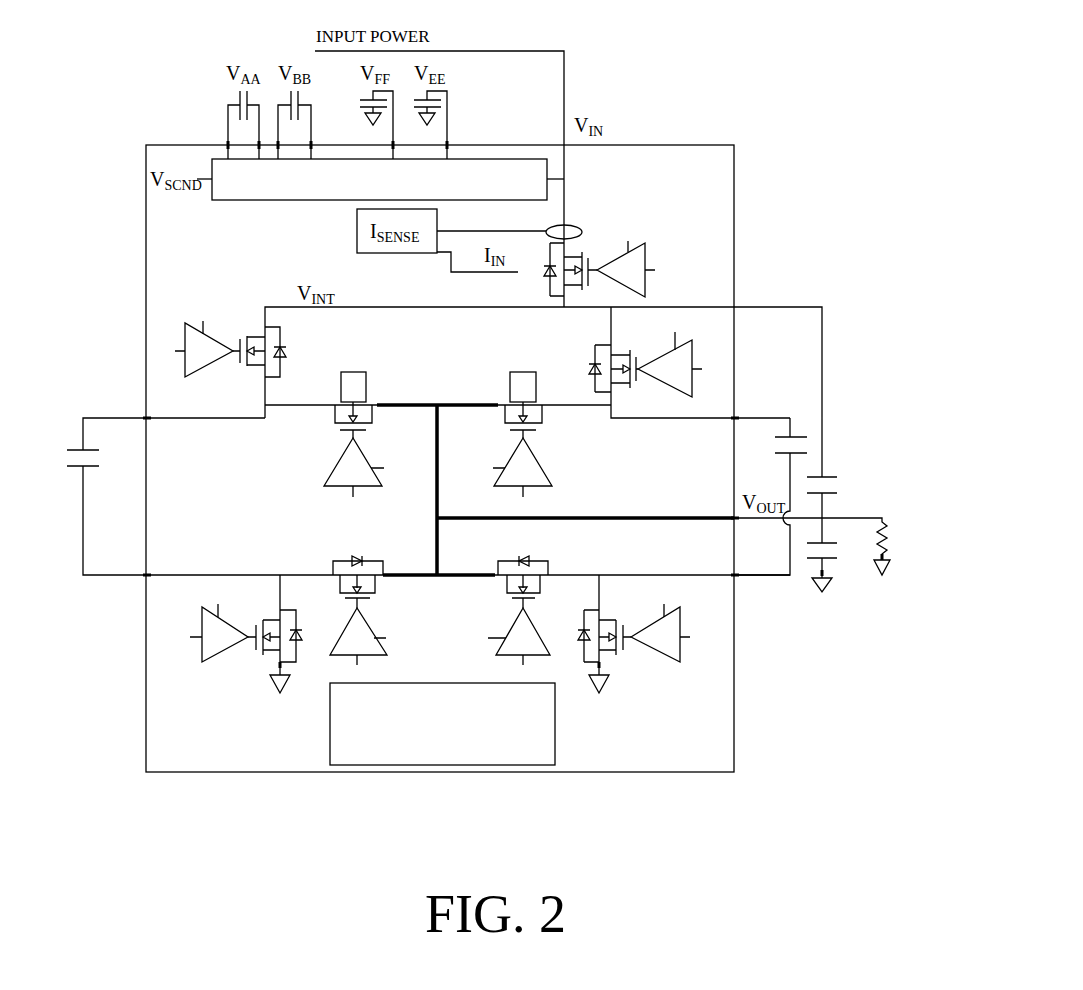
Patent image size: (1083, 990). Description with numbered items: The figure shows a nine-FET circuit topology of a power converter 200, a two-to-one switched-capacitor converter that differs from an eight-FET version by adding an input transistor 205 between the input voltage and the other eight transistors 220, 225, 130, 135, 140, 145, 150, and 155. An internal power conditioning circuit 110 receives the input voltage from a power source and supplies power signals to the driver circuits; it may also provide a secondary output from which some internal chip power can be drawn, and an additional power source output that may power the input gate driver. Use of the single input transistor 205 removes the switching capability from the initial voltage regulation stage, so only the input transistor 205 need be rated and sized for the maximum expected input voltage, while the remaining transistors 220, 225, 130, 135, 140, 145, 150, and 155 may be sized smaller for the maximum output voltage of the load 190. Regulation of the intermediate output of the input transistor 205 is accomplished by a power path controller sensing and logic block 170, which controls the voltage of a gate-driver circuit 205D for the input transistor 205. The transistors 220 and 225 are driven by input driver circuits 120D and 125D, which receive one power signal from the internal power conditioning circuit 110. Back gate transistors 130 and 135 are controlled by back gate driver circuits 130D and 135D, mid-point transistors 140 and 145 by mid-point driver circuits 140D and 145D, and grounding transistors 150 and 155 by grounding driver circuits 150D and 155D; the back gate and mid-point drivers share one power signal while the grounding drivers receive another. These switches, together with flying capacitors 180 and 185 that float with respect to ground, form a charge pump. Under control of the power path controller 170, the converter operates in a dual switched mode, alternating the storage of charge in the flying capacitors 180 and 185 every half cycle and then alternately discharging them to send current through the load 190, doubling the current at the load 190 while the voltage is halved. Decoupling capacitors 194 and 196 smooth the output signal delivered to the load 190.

The power converter 200 is at (765, 86).
The internal power conditioning circuit 110 is at (378, 193).
The input transistor 205 is at (553, 273).
The gate-driver circuit 205D is at (645, 250).
The transistor 220 is at (278, 348).
The transistor 225 is at (596, 359).
The input driver circuit 120D is at (185, 330).
The input driver circuit 125D is at (692, 350).
The back gate transistor 130 is at (332, 406).
The back gate transistor 135 is at (543, 406).
The back gate driver circuit 130D is at (333, 472).
The back gate driver circuit 135D is at (541, 470).
The mid-point transistor 140 is at (335, 569).
The mid-point transistor 145 is at (544, 569).
The mid-point driver circuit 140D is at (335, 648).
The mid-point driver circuit 145D is at (552, 648).
The grounding transistor 150 is at (273, 634).
The grounding transistor 155 is at (606, 634).
The grounding driver circuit 150D is at (212, 658).
The grounding driver circuit 155D is at (682, 653).
The power path controller sensing and logic block 170 is at (452, 737).
The flying capacitor 180 is at (73, 447).
The flying capacitor 185 is at (793, 430).
The decoupling capacitor 194 is at (830, 475).
The decoupling capacitor 196 is at (835, 560).
The load 190 is at (828, 546).